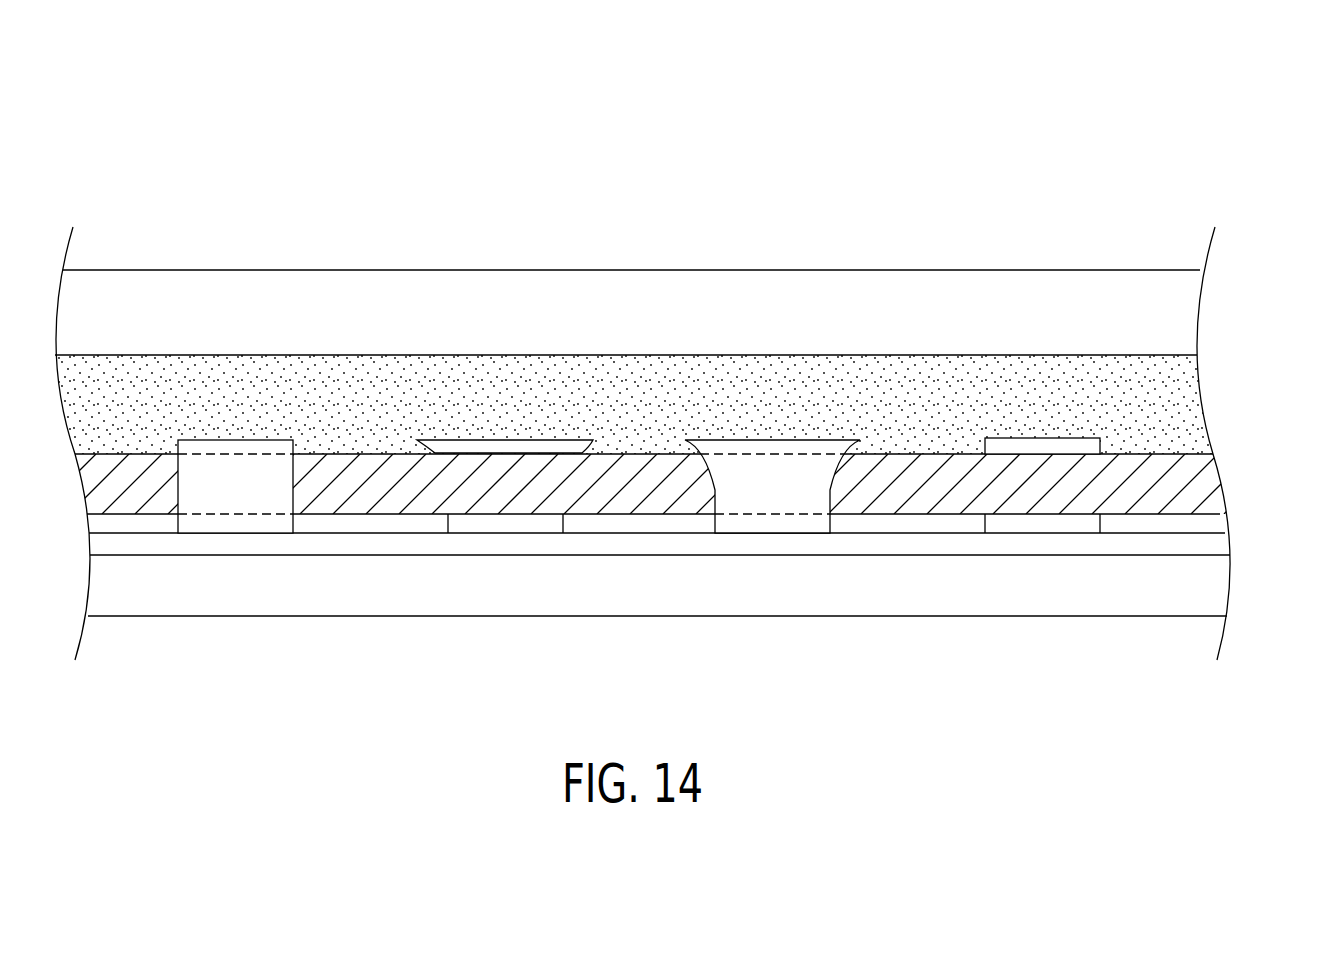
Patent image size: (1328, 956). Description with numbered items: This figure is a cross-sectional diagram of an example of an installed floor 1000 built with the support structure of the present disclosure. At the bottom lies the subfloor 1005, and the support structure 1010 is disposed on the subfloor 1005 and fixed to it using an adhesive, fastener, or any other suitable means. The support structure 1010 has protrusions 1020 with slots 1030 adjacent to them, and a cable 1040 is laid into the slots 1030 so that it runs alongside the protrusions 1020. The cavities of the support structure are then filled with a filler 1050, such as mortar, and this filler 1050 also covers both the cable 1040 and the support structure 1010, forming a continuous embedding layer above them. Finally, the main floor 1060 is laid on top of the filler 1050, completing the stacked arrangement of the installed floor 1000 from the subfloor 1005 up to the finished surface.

The installed floor 1000 is at (607, 128).
The subfloor 1005 is at (1127, 598).
The support structure 1010 is at (1218, 545).
The protrusions 1020 is at (270, 450).
The slots 1030 is at (362, 526).
The cable 1040 is at (1213, 498).
The filler 1050 is at (1197, 422).
The main floor 1060 is at (1183, 318).